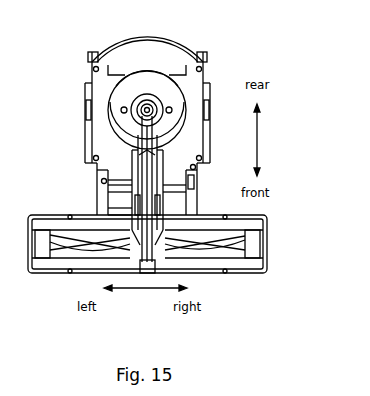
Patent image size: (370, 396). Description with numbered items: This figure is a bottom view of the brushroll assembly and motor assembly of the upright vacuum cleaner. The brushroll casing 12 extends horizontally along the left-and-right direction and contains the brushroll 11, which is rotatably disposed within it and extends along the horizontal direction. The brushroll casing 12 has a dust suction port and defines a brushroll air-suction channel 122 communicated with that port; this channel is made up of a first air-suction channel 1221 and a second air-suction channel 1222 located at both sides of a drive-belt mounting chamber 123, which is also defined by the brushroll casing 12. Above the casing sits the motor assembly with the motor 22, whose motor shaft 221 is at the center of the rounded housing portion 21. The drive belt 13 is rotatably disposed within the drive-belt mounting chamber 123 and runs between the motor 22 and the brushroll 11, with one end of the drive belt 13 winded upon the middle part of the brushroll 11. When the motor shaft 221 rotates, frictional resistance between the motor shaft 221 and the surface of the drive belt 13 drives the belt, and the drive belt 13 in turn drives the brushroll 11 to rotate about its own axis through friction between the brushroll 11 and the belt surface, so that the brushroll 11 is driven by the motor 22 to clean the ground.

The brushroll 11 is at (183, 248).
The brushroll casing 12 is at (73, 274).
The drive belt 13 is at (128, 160).
The upper housing cover 21 is at (180, 49).
The motor 22 is at (158, 92).
The motor shaft 221 is at (158, 117).
The brushroll air-suction channel 122 is at (56, 180).
The drive-belt mounting chamber 123 is at (197, 159).
The first air-suction channel 1221 is at (120, 218).
The second air-suction channel 1222 is at (121, 186).